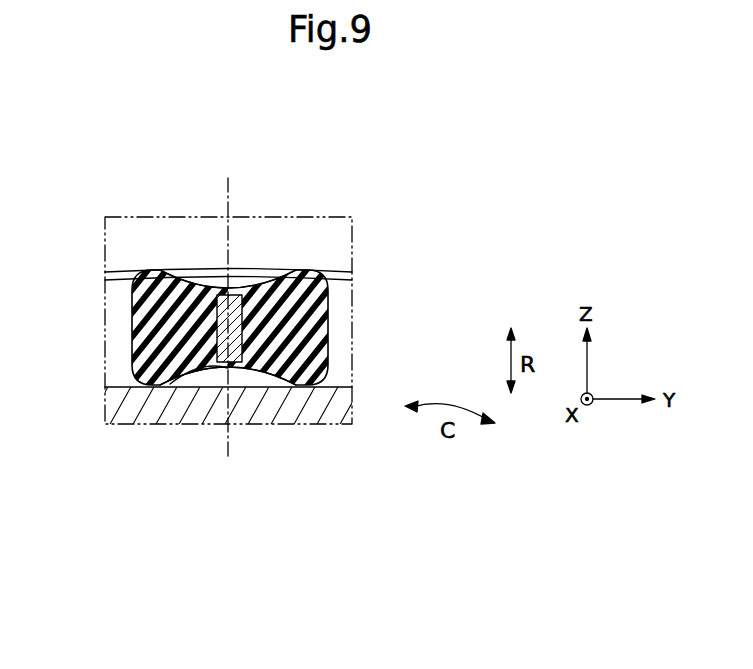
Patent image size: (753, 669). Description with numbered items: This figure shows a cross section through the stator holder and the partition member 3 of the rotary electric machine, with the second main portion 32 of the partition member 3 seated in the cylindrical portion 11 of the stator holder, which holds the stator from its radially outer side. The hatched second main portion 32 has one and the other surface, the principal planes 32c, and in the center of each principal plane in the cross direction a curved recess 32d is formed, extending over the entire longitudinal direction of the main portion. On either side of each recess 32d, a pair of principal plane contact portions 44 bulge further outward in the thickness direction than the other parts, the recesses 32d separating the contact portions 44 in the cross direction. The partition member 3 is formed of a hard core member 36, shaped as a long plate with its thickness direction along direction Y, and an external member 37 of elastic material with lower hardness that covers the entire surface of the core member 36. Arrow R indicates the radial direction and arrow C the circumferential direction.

The partition member 3 is at (225, 324).
The cylindrical portion 11 is at (278, 389).
The second main portion 32 is at (328, 310).
The principal plane 32c is at (258, 287).
The recess 32d is at (200, 378).
The core member 36 is at (237, 342).
The external member 37 is at (182, 362).
The principal plane contact portion 44 is at (153, 268).